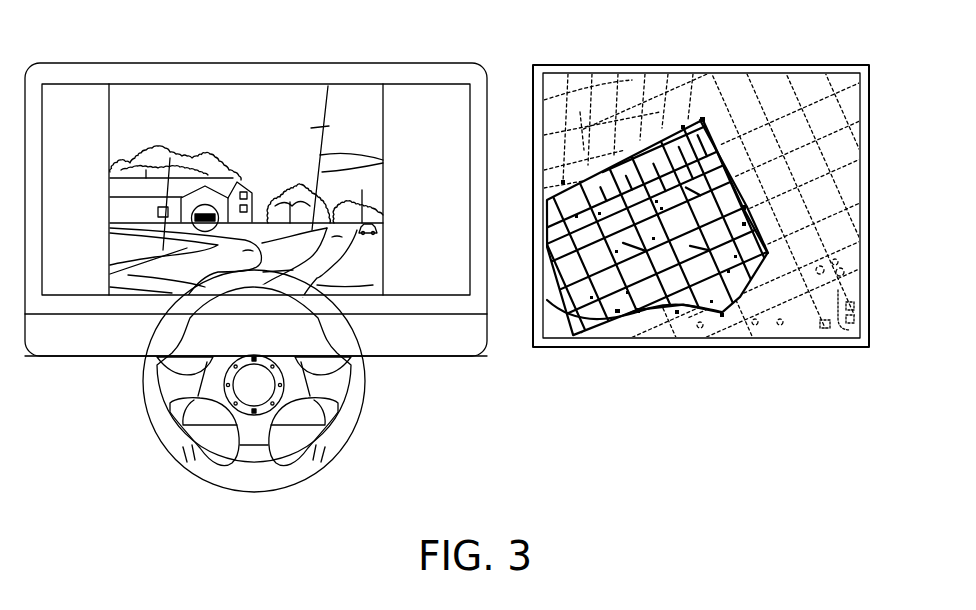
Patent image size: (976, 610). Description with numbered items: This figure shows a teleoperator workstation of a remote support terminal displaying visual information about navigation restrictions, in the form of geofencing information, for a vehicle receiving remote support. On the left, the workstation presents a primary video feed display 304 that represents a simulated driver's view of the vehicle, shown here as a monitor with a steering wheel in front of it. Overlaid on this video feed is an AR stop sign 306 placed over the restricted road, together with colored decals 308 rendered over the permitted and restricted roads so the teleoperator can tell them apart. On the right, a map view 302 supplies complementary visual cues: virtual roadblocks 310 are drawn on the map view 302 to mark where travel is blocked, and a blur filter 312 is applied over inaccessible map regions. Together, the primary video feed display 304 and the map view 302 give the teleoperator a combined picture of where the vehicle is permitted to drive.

The map view 302 is at (722, 398).
The primary video feed display 304 is at (427, 411).
The AR stop sign 306 is at (207, 194).
The colored decals 308 is at (248, 257).
The virtual roadblocks 310 is at (744, 210).
The blur filter 312 is at (814, 303).